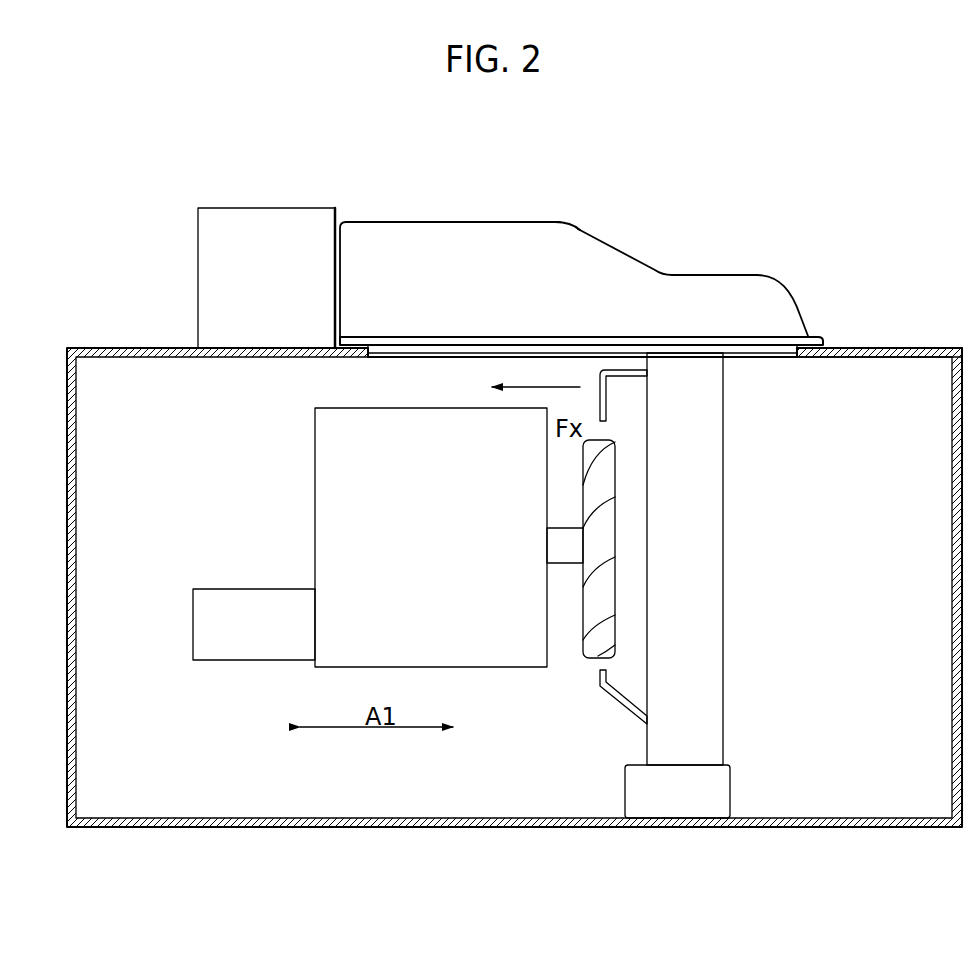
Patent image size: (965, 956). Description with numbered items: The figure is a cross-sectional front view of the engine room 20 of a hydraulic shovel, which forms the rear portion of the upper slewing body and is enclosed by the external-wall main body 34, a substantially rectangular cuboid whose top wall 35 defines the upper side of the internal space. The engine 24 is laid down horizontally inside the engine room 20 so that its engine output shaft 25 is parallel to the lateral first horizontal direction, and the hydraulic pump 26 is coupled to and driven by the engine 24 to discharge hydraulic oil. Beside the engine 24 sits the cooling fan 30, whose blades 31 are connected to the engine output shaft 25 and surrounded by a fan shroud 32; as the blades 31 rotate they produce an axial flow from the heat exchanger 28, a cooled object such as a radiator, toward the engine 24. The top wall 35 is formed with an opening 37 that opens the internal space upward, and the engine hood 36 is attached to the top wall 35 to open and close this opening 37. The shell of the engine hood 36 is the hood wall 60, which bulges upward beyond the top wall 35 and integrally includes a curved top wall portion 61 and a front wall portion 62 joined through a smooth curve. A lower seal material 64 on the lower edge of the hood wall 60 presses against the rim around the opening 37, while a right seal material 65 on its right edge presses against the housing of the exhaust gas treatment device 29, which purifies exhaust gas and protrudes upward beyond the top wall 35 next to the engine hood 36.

The engine room 20 is at (624, 252).
The engine 24 is at (318, 438).
The engine output shaft 25 is at (563, 552).
The hydraulic pump 26 is at (232, 600).
The heat exchanger 28 is at (708, 487).
The exhaust gas treatment device 29 is at (205, 255).
The cooling fan 30 is at (592, 570).
The blades 31 is at (590, 607).
The fan shroud 32 is at (612, 700).
The external-wall main body 34 is at (62, 385).
The top wall 35 is at (922, 346).
The engine hood 36 is at (572, 213).
The opening 37 is at (395, 352).
The hood wall 60 is at (678, 290).
The top wall portion 61 is at (632, 250).
The front wall portion 62 is at (477, 245).
The lower seal material 64 is at (525, 340).
The right seal material 65 is at (340, 260).